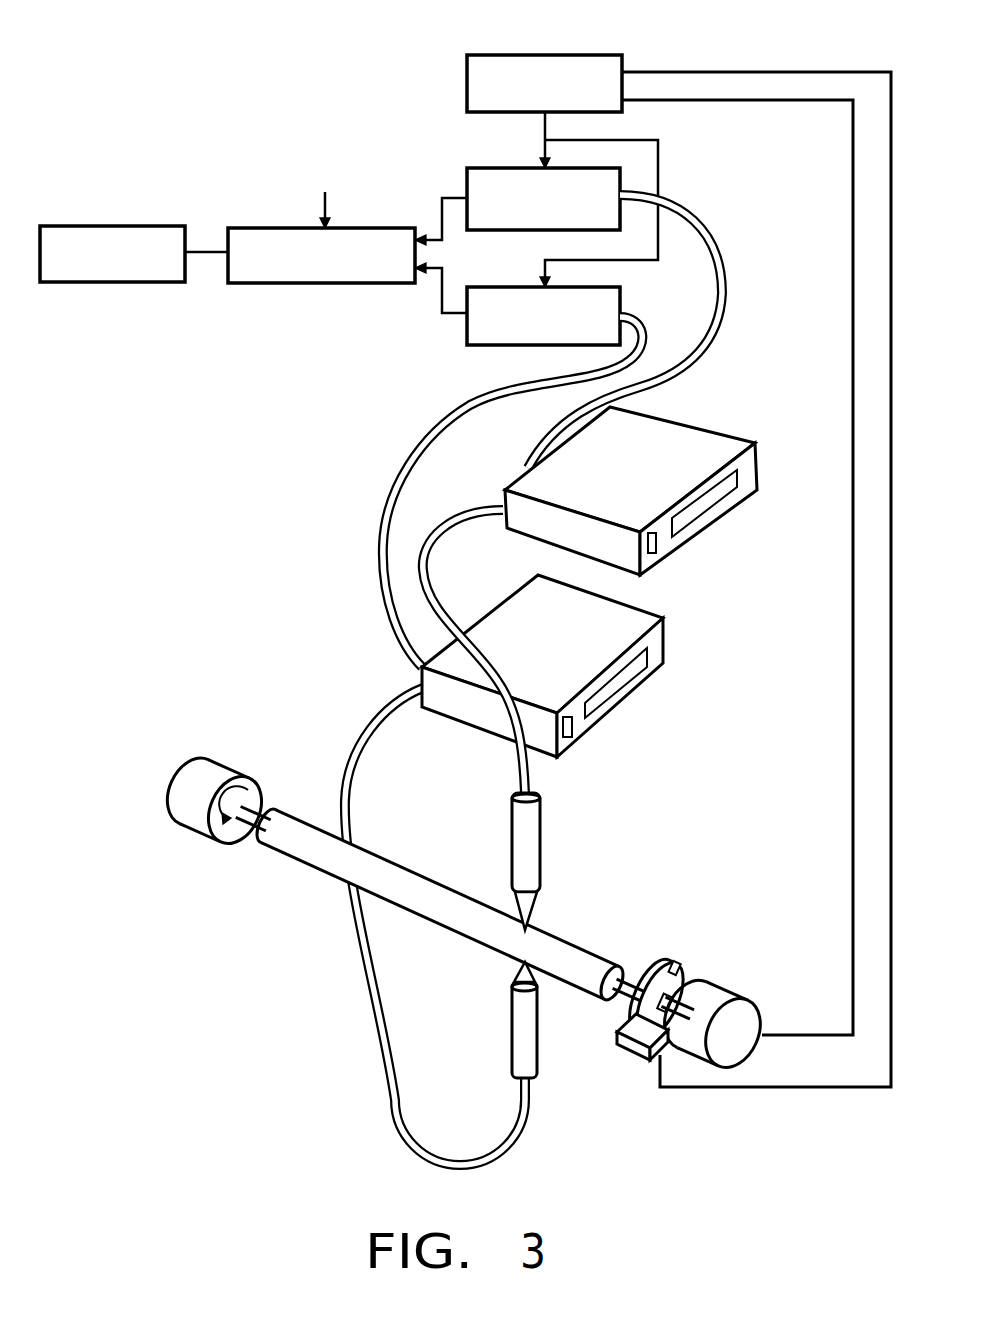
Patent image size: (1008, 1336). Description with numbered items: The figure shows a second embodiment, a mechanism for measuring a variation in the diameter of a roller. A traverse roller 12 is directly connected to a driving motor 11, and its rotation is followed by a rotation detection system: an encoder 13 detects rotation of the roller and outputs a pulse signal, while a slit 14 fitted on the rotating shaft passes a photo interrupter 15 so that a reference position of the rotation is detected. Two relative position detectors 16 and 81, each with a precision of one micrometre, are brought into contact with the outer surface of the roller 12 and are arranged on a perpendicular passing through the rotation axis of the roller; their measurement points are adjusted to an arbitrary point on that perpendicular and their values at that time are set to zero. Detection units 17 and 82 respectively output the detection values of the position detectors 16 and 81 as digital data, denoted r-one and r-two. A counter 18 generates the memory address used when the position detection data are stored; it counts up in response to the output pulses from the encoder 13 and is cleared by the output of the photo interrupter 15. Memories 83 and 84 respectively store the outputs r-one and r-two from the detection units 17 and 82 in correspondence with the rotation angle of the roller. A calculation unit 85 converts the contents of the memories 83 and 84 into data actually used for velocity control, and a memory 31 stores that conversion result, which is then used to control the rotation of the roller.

The driving motor 11 is at (195, 778).
The traverse roller 12 is at (298, 823).
The encoder 13 is at (727, 1002).
The slit 14 is at (662, 975).
The photo interrupter 15 is at (630, 1060).
The relative position detector 16 is at (535, 855).
The detection unit 17 is at (723, 437).
The counter 18 is at (595, 55).
The memory 31 is at (142, 226).
The relative position detector 81 is at (516, 1040).
The detection unit 82 is at (663, 667).
The memory 83 is at (468, 168).
The memory 84 is at (466, 345).
The calculation unit 85 is at (268, 228).